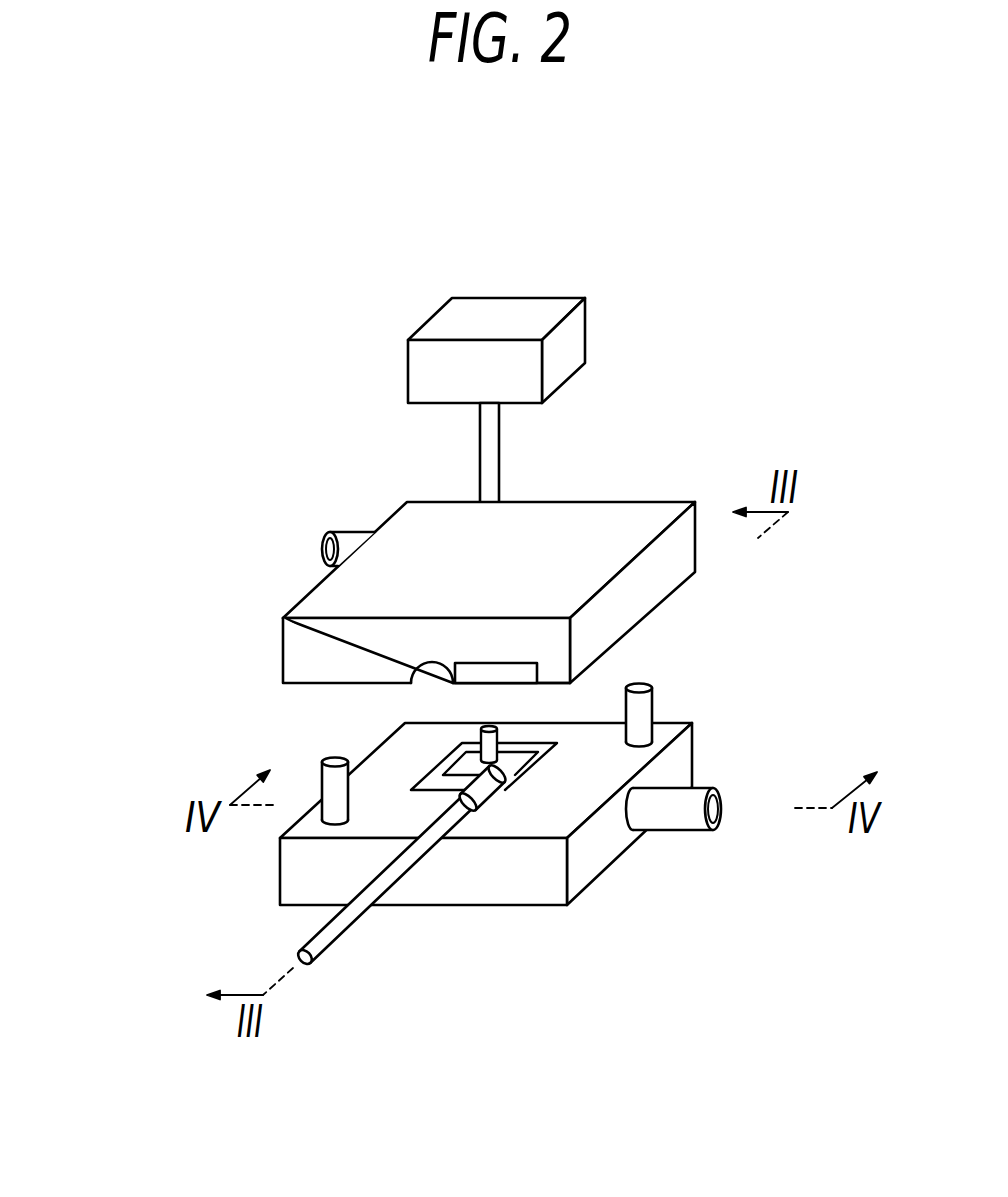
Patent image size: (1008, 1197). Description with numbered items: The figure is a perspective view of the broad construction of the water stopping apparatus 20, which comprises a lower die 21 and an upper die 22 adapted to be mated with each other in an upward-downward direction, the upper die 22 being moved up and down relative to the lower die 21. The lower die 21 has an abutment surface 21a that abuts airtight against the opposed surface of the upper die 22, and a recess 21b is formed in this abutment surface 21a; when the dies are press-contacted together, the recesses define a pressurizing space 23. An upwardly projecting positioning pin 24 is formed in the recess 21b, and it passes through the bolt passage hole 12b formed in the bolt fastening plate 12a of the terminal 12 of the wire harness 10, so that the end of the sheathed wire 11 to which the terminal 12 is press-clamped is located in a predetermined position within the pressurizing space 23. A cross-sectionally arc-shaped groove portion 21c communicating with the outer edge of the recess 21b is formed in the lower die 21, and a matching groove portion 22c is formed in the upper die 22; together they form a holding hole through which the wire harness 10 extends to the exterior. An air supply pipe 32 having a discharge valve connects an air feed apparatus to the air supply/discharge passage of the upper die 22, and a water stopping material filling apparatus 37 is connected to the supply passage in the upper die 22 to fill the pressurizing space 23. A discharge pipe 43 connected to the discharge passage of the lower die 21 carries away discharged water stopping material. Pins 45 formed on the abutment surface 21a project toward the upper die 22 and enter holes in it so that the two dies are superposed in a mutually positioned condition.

The wire harness 10 is at (371, 857).
The sheathed wire 11 is at (309, 940).
The terminal 12 is at (371, 857).
The bolt fastening plate 12a is at (512, 776).
The bolt passage hole 12b is at (466, 752).
The water stopping apparatus 20 is at (444, 684).
The lower die 21 is at (517, 791).
The abutment surface 21a is at (607, 767).
The recess 21b is at (535, 762).
The groove portion 21c is at (411, 790).
The upper die 22 is at (462, 544).
The groove portion 22c is at (421, 672).
The pressurizing space 23 is at (556, 741).
The positioning pin 24 is at (482, 737).
The air supply pipe 32 is at (358, 532).
The water stopping material filling apparatus 37 is at (507, 313).
The discharge pipe 43 is at (673, 830).
The pins 45 is at (322, 763).